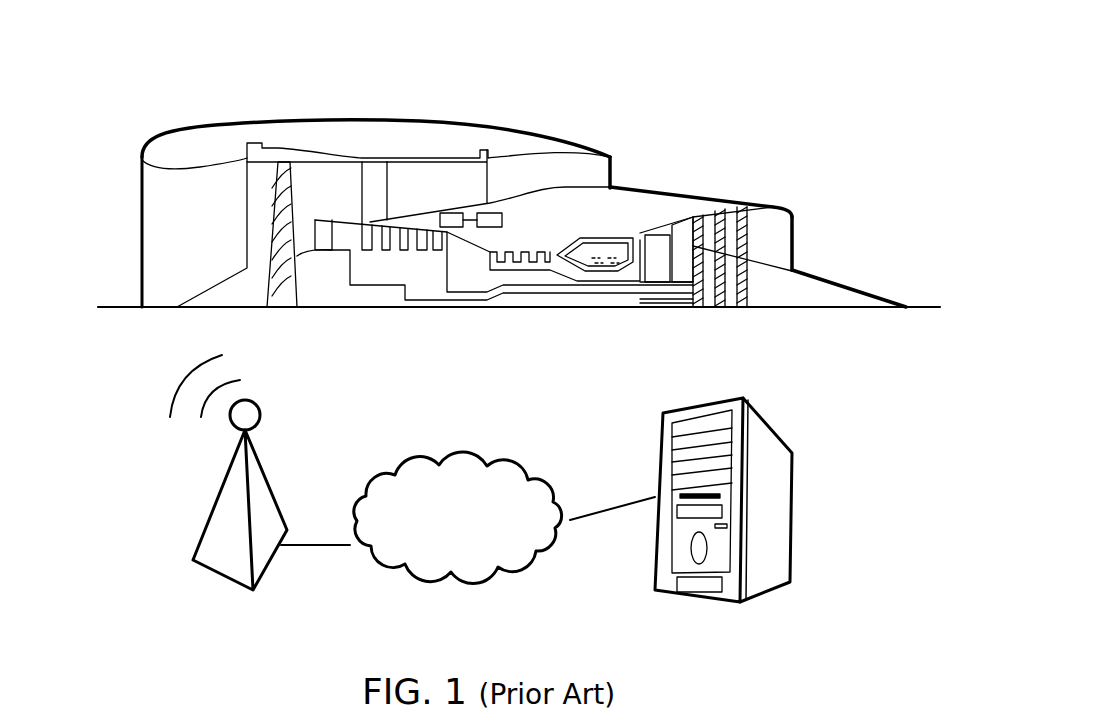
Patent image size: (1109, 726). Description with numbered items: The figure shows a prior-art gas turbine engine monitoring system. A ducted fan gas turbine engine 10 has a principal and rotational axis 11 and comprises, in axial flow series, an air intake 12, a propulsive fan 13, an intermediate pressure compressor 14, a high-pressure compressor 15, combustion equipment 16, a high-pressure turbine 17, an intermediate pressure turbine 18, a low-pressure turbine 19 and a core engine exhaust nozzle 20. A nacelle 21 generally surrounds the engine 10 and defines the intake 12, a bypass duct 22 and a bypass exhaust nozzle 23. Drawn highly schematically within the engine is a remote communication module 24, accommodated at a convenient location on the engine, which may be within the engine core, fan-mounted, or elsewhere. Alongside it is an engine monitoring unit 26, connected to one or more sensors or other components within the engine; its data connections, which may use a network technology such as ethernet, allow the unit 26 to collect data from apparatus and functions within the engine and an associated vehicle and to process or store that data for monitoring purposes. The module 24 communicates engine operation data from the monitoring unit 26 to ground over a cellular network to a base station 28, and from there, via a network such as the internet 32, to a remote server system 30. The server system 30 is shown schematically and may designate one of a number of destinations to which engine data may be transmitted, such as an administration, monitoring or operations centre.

The ducted fan gas turbine engine 10 is at (745, 66).
The principal and rotational axis 11 is at (125, 306).
The air intake 12 is at (158, 168).
The propulsive fan 13 is at (283, 168).
The intermediate pressure compressor 14 is at (380, 227).
The high-pressure compressor 15 is at (515, 252).
The combustion equipment 16 is at (583, 247).
The high-pressure turbine 17 is at (643, 233).
The intermediate pressure turbine 18 is at (677, 223).
The low-pressure turbine 19 is at (717, 212).
The core engine exhaust nozzle 20 is at (773, 217).
The nacelle 21 is at (222, 142).
The bypass duct 22 is at (455, 178).
The bypass exhaust nozzle 23 is at (613, 153).
The remote communication module 24 is at (452, 216).
The engine monitoring unit 26 is at (490, 215).
The base station 28 is at (208, 520).
The remote server system 30 is at (793, 508).
The internet 32 is at (468, 583).